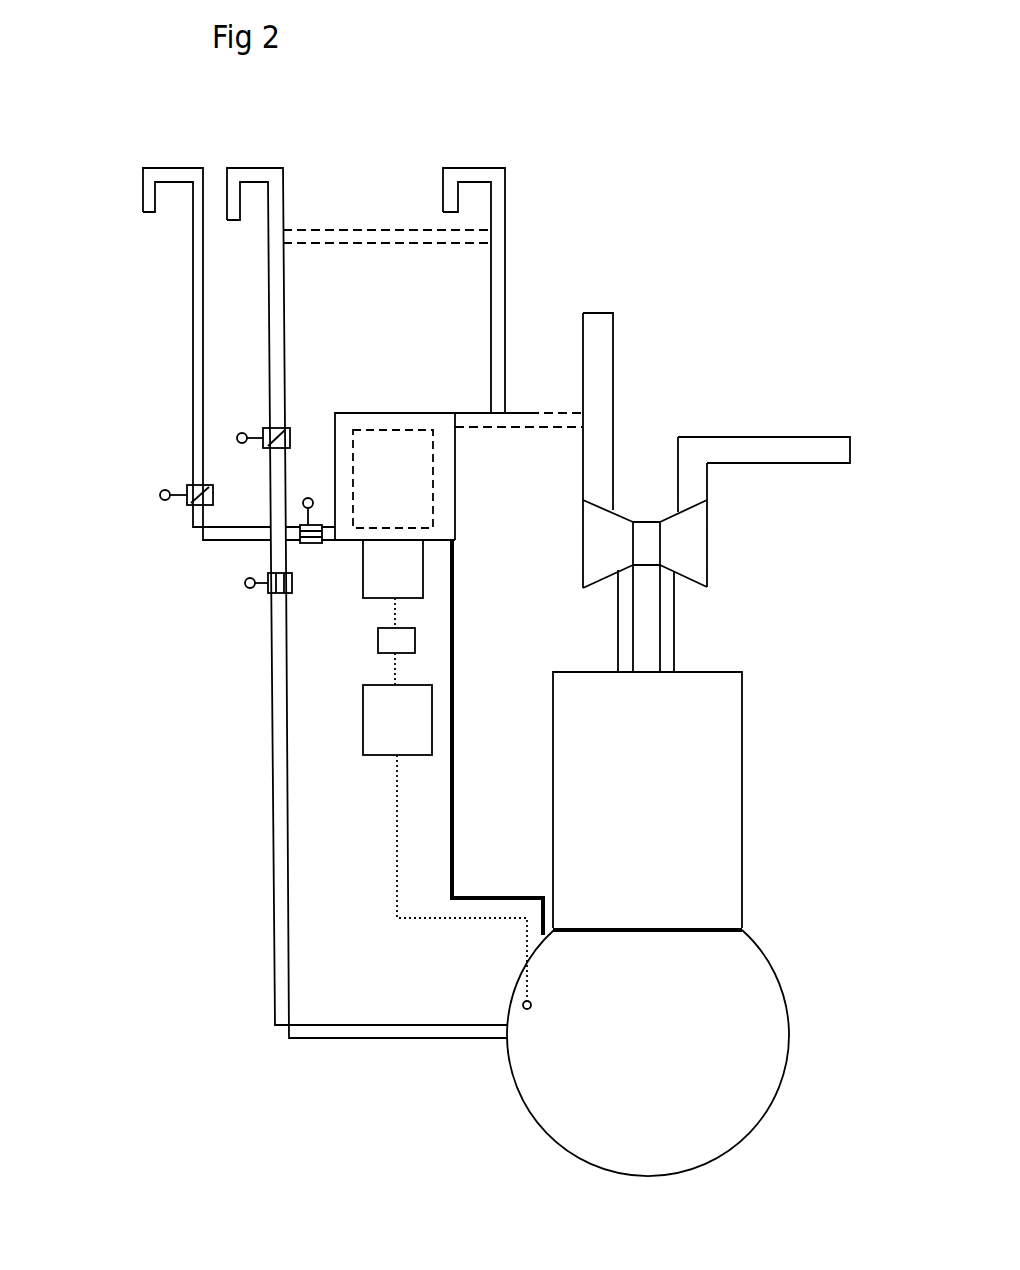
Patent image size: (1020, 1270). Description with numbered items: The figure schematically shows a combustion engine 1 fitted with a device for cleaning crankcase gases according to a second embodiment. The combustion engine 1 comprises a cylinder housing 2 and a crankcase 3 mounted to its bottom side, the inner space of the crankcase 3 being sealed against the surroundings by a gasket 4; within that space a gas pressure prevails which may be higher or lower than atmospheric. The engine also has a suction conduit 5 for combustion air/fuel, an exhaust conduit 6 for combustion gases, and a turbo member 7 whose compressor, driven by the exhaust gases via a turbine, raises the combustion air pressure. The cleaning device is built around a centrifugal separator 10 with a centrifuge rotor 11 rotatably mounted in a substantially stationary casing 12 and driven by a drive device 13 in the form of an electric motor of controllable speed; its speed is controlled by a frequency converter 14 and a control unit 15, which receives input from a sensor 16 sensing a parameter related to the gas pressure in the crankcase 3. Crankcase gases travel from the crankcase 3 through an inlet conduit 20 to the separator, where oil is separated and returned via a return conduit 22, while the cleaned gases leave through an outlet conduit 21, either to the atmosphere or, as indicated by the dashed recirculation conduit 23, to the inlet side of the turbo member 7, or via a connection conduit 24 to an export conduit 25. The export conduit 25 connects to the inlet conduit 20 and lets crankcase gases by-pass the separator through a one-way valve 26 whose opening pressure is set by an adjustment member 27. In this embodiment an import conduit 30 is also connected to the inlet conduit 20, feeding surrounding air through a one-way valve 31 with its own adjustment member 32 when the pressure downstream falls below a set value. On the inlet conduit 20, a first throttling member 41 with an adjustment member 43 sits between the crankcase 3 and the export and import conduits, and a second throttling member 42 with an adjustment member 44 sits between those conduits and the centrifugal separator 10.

The combustion engine 1 is at (706, 744).
The cylinder housing 2 is at (695, 833).
The crankcase 3 is at (698, 1028).
The gasket 4 is at (700, 930).
The suction conduit 5 is at (622, 613).
The exhaust conduit 6 is at (667, 630).
The turbo member 7 is at (696, 535).
The centrifugal separator 10 is at (377, 415).
The centrifuge rotor 11 is at (410, 467).
The casing 12 is at (455, 498).
The drive device 13 is at (403, 573).
The frequency converter 14 is at (415, 640).
The control unit 15 is at (405, 718).
The sensor 16 is at (517, 1003).
The inlet conduit 20 is at (277, 680).
The outlet conduit 21 is at (497, 322).
The return conduit 22 is at (452, 853).
The recirculation conduit 23 is at (532, 413).
The connection conduit 24 is at (335, 230).
The export conduit 25 is at (275, 296).
The one-way valve 26 is at (278, 432).
The adjustment member 27 is at (237, 437).
The import conduit 30 is at (195, 284).
The one-way valve 31 is at (188, 487).
The adjustment member 32 is at (160, 495).
The first throttling member 41 is at (268, 575).
The second throttling member 42 is at (312, 545).
The adjustment member 43 is at (245, 583).
The adjustment member 44 is at (303, 501).